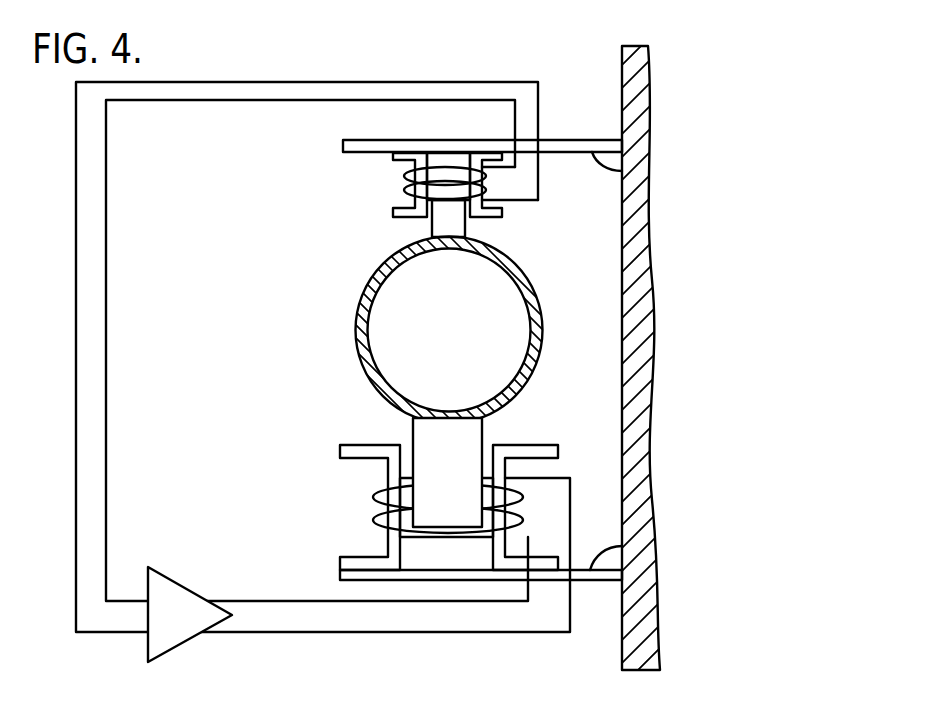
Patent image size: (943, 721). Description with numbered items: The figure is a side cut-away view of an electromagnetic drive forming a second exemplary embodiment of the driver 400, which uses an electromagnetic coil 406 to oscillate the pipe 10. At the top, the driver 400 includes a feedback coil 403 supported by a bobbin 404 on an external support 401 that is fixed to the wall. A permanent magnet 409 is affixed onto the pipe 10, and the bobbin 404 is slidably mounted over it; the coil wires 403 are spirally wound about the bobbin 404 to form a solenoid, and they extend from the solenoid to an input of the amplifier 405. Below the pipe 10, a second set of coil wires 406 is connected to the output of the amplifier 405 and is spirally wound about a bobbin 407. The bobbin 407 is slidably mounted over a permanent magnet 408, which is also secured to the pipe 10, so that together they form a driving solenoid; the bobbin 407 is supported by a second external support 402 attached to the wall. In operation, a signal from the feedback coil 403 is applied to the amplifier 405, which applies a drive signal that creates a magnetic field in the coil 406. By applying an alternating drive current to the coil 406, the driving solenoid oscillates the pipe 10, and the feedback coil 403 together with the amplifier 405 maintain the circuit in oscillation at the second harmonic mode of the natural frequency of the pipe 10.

The pipe 10 is at (542, 342).
The driver 400 is at (644, 482).
The external support 401 is at (593, 140).
The external support 402 is at (587, 580).
The feedback coil 403 is at (76, 310).
The bobbin 404 is at (502, 213).
The amplifier 405 is at (187, 587).
The electromagnetic coil 406 is at (373, 492).
The bobbin 407 is at (358, 445).
The permanent magnet 408 is at (482, 432).
The permanent magnet 409 is at (466, 227).